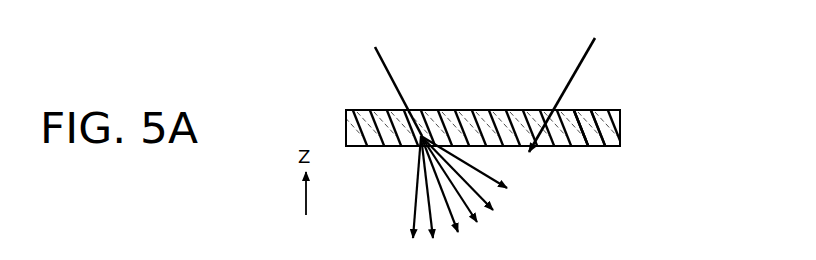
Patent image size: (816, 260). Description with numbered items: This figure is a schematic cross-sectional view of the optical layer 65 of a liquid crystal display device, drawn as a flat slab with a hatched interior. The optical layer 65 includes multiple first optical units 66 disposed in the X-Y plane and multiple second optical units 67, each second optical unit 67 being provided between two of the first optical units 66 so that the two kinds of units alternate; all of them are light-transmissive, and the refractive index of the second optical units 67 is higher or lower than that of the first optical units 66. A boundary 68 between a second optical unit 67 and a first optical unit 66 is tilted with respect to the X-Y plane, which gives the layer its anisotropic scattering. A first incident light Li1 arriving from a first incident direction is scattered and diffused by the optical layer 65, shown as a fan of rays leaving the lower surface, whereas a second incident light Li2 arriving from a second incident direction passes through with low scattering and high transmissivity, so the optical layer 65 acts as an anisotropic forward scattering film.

The optical layer 65 is at (627, 93).
The first optical units 66 is at (576, 140).
The second optical unit 67 is at (588, 140).
The boundary 68 is at (576, 118).
The first incident light Li1 is at (388, 72).
The second incident light Li2 is at (573, 70).